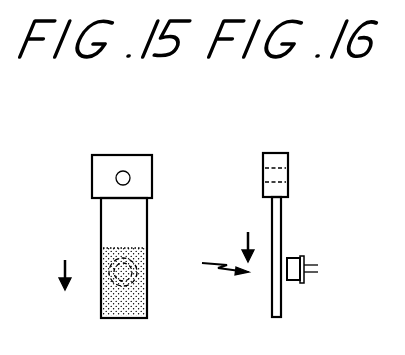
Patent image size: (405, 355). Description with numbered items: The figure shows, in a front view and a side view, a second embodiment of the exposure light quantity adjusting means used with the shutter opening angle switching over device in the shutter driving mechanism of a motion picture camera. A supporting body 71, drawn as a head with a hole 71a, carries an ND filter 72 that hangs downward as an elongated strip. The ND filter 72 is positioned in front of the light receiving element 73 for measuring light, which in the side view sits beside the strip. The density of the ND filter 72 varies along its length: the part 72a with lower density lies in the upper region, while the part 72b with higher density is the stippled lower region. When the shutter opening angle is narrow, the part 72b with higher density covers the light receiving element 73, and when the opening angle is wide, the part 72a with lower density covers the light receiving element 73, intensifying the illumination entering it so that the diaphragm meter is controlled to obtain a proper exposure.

In FIG. 15, the supporting body 71 is at (133, 155).
In FIG. 16, the supporting body 71 is at (276, 153).
In FIG. 15, the hole 71a is at (130, 177).
In FIG. 16, the ND filter 72 is at (278, 218).
In FIG. 15, the part with lower density 72a is at (115, 230).
In FIG. 15, the part with higher density 72b is at (105, 307).
In FIG. 16, the light receiving element 73 is at (290, 260).